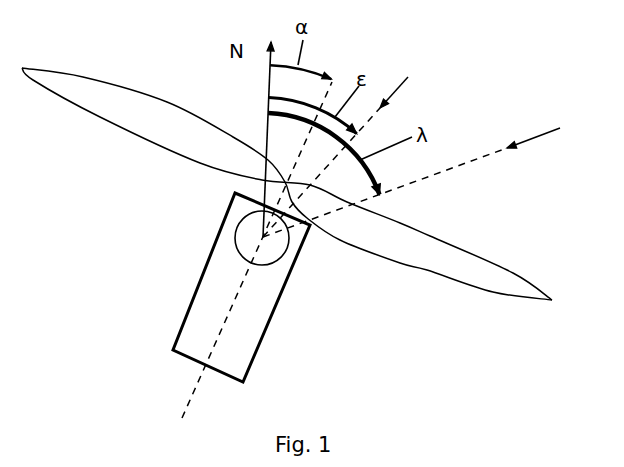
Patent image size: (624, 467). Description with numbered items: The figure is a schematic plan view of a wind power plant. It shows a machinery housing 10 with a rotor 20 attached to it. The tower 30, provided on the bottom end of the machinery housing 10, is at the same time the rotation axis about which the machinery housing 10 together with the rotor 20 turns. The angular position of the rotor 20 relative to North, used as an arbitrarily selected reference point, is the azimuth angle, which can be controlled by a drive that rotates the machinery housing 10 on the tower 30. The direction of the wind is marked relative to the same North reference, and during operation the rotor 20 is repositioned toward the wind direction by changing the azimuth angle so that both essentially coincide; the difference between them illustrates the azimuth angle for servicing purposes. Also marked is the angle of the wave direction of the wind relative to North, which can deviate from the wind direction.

The machinery housing 10 is at (256, 353).
The rotor 20 is at (425, 270).
The tower 30 is at (236, 251).